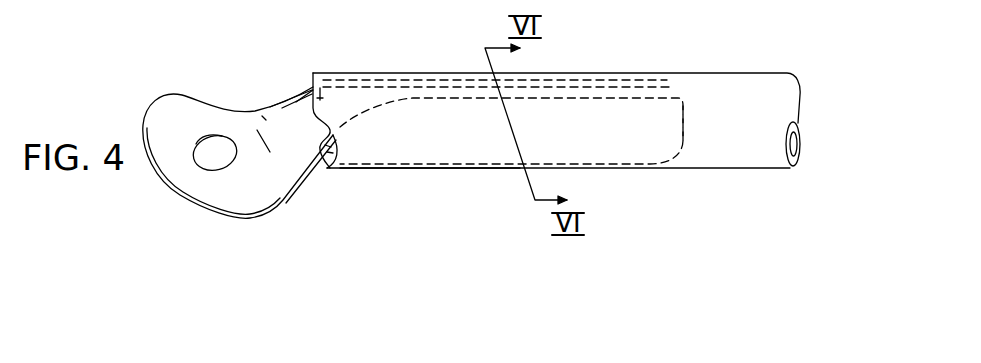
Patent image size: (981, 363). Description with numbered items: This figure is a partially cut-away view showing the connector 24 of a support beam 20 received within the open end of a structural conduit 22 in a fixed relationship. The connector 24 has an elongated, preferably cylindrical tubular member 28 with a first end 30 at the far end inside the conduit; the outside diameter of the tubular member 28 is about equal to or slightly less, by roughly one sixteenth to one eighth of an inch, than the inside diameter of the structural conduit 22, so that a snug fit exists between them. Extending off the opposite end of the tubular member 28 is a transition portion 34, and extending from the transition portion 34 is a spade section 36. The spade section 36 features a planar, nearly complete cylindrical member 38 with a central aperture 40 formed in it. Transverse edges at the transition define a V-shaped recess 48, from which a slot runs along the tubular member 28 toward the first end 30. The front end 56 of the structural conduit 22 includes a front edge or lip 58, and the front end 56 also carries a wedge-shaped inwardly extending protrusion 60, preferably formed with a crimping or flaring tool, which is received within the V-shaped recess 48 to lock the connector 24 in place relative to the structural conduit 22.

The support beam 20 is at (700, 68).
The structural conduit 22 is at (722, 169).
The connector 24 is at (283, 205).
The elongated tubular member 28 is at (615, 147).
The first end 30 is at (682, 143).
The transition portion 34 is at (313, 165).
The spade section 36 is at (232, 194).
The planar cylindrical member 38 is at (167, 153).
The central aperture 40 is at (217, 158).
The V-shaped recess 48 is at (333, 168).
The front end 56 is at (380, 170).
The front edge or lip 58 is at (297, 97).
The wedge-shaped protrusion 60 is at (337, 110).